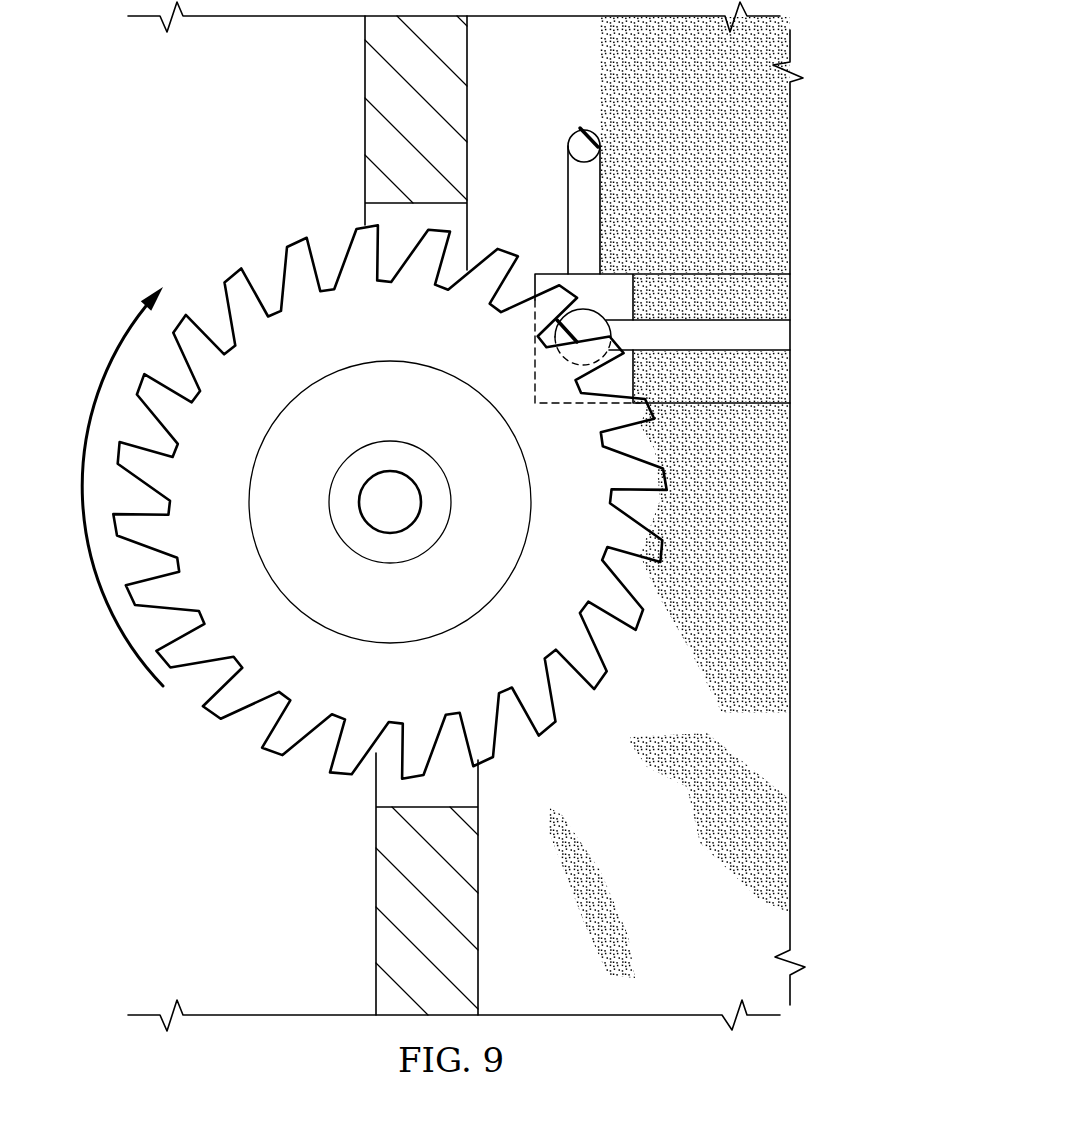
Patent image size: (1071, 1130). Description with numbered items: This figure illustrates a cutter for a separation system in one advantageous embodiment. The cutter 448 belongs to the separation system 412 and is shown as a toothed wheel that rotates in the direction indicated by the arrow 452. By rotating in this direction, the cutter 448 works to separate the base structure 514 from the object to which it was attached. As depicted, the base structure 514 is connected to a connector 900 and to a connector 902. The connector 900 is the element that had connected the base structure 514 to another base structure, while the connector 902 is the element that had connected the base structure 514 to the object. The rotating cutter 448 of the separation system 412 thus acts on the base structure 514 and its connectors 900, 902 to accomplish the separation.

The separation system 412 is at (389, 477).
The cutter 448 is at (262, 764).
The arrow 452 is at (99, 389).
The base structure 514 is at (552, 273).
The connector 900 is at (576, 190).
The connector 902 is at (782, 336).